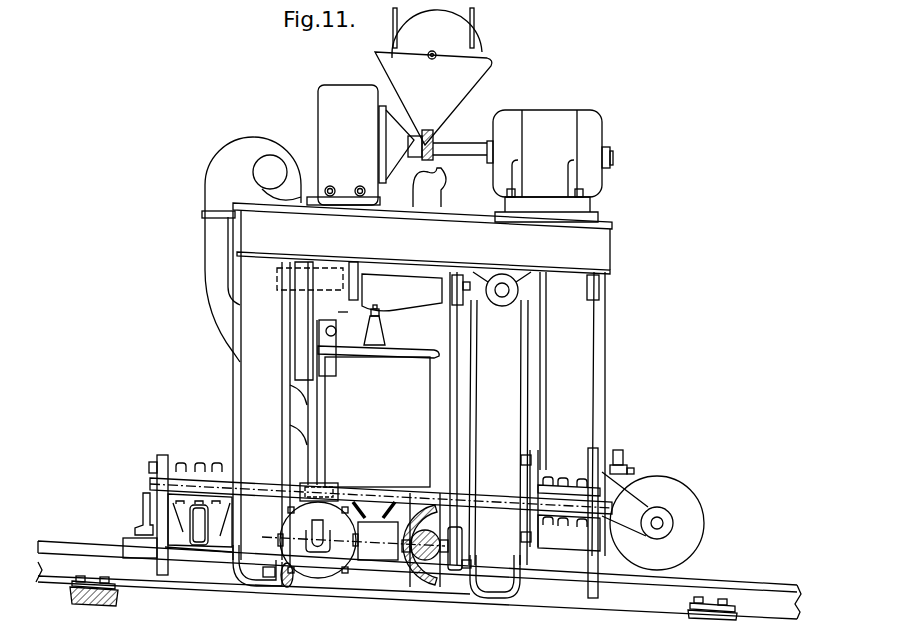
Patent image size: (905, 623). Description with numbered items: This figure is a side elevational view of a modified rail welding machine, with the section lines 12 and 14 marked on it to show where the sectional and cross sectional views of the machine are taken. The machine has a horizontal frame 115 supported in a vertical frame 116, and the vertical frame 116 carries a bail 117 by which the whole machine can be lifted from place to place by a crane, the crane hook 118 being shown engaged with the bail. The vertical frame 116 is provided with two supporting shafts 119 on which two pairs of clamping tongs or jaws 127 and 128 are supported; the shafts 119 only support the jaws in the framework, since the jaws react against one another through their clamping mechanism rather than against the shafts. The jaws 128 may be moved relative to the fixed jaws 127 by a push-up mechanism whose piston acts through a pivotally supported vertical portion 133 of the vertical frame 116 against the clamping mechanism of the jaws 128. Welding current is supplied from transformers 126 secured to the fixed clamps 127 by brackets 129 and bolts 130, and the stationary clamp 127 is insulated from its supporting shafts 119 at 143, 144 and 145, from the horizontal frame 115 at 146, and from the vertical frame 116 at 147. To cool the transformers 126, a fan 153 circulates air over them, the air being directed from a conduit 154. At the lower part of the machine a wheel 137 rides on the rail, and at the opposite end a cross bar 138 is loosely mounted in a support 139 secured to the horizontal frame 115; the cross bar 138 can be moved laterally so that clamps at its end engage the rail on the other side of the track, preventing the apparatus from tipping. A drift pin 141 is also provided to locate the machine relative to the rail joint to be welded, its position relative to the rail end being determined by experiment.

The section line 12— 12 is at (613, 428).
The section line 14— 14 is at (632, 232).
The horizontal frame 115 is at (484, 493).
The vertical frame 116 is at (593, 347).
The bail 117 is at (436, 193).
The hook 118 is at (451, 119).
The supporting shafts 119 is at (381, 282).
The transformers 126 is at (384, 419).
The clamping jaws 127 is at (359, 312).
The clamping jaws 128 is at (428, 314).
The brackets 129 is at (334, 340).
The bolts 130 is at (337, 334).
The pivotally supported vertical portion 133 is at (511, 413).
The wheel 137 is at (696, 515).
The cross bar 138 is at (200, 548).
The support 139 is at (183, 532).
The drift pin 141 is at (143, 503).
The insulation 143 is at (327, 266).
The insulation 144 is at (354, 264).
The insulation 145 is at (303, 270).
The insulation 146 is at (328, 484).
The insulation 147 is at (285, 587).
The fan 153 is at (262, 143).
The conduit 154 is at (205, 273).